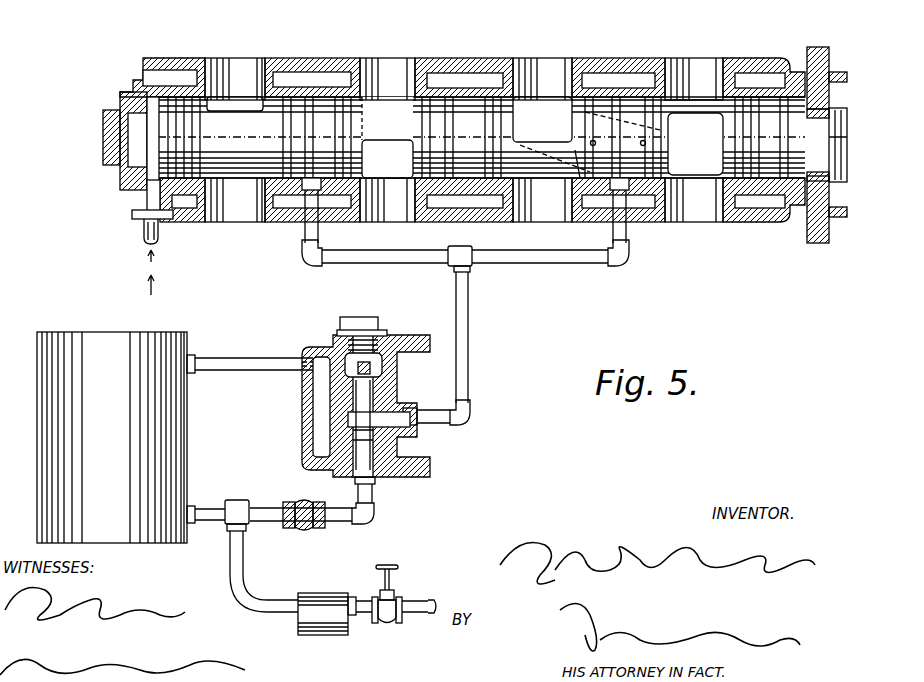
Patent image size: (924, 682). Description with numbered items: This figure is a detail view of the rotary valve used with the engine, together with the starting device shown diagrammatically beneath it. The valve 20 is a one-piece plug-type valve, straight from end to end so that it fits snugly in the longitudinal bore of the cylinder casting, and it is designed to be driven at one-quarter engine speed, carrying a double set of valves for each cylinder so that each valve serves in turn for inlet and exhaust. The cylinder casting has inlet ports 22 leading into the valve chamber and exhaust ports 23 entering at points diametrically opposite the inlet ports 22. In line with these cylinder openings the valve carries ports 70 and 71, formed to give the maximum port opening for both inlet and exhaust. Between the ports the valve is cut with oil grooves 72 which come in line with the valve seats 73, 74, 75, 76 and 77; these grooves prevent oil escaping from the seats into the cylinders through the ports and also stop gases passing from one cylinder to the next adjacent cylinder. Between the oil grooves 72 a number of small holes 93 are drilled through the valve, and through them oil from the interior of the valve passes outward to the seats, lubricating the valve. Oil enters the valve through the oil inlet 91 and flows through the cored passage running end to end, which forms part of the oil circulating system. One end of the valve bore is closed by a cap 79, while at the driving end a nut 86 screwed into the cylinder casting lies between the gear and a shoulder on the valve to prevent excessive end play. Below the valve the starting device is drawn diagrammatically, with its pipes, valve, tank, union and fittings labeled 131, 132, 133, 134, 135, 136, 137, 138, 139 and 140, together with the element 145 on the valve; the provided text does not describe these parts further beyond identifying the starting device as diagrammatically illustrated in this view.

The rotary valve 20 is at (770, 260).
The inlet ports 22 is at (238, 65).
The exhaust ports 23 is at (228, 222).
The valve port 70 is at (236, 104).
The valve port 71 is at (243, 173).
The oil grooves 72 is at (178, 128).
The valve seat 73 is at (167, 100).
The valve seat 74 is at (305, 97).
The valve seat 75 is at (455, 100).
The valve seat 76 is at (607, 100).
The valve seat 77 is at (768, 97).
The cap 79 is at (110, 140).
The nut 86 is at (822, 75).
The oil inlet 91 is at (150, 196).
The small holes 93 is at (641, 141).
The pipe 131 is at (470, 300).
The valve 132 is at (384, 397).
The tank 133 is at (112, 437).
The pipe 134 is at (258, 345).
The valve stem 135 is at (374, 440).
The pipe 136 is at (373, 500).
The union 137 is at (300, 533).
The pipe 138 is at (238, 583).
The strainer 139 is at (325, 636).
The valve 140 is at (392, 606).
The passage 145 is at (580, 170).